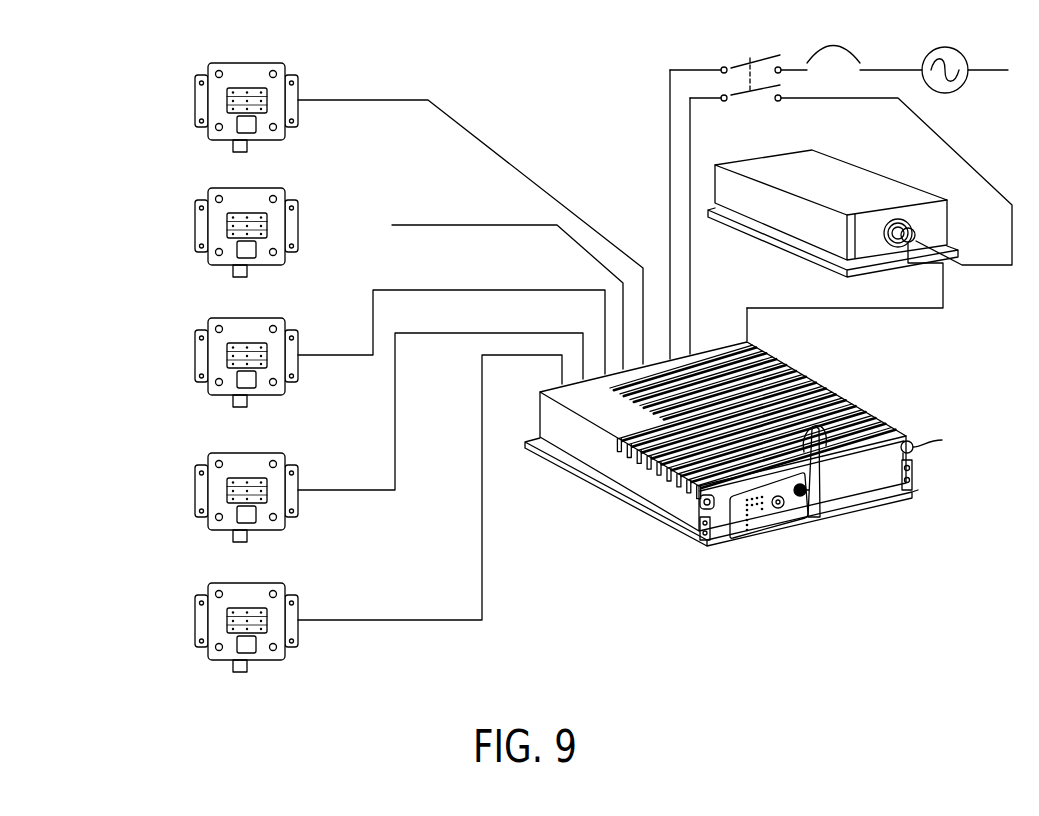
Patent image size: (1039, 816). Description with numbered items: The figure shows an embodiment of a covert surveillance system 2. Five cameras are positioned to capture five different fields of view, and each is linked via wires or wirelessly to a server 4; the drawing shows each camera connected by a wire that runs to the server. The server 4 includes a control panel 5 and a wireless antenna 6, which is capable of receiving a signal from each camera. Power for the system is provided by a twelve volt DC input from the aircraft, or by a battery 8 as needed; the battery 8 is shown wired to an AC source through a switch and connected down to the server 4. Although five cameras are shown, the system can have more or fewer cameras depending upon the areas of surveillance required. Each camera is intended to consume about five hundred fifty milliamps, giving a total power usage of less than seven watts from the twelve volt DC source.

The covert surveillance system 2 is at (86, 32).
The server 4 is at (935, 439).
The control panel 5 is at (748, 539).
The wireless antenna 6 is at (834, 487).
The battery 8 is at (863, 168).